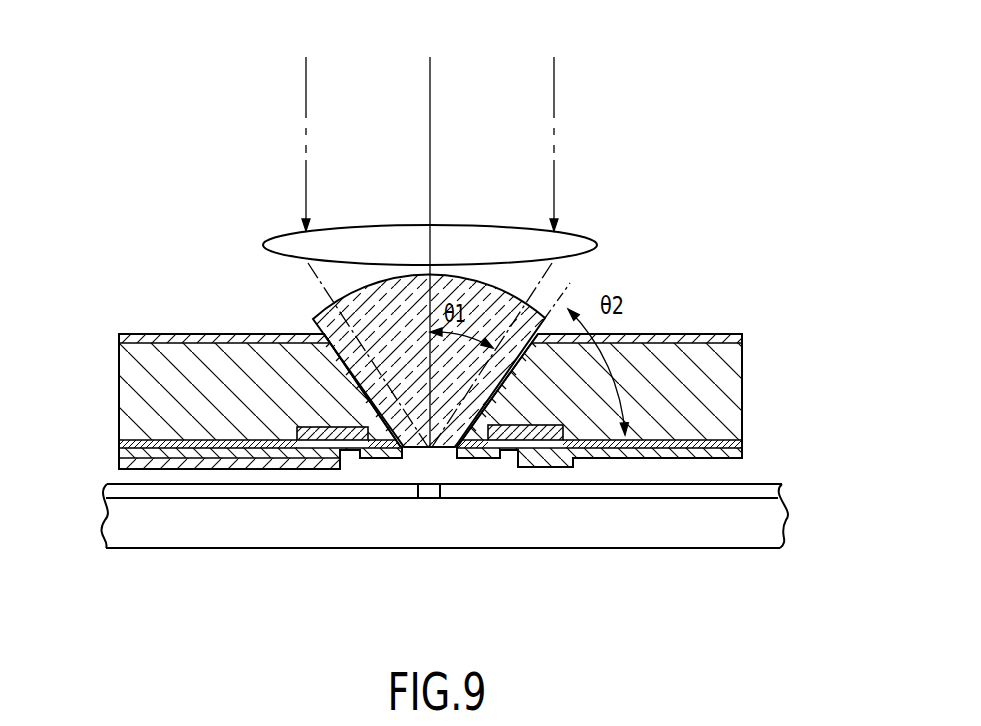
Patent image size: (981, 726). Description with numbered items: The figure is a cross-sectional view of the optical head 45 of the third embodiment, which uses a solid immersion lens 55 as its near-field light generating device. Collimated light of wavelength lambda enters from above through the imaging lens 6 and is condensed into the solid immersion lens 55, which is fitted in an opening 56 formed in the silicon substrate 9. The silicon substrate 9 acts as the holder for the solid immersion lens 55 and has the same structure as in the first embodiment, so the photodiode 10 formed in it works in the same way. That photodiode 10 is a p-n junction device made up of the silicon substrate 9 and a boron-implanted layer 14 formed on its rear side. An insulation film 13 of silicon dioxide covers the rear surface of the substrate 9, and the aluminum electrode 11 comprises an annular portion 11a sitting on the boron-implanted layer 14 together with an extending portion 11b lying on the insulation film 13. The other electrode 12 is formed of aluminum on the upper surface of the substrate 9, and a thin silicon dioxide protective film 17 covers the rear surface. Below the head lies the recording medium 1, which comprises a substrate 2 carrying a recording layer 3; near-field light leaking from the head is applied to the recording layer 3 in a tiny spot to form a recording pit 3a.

The recording medium 1 is at (601, 568).
The substrate 2 is at (787, 527).
The recording layer 3 is at (778, 491).
The recording pit 3a is at (431, 500).
The imaging lens 6 is at (588, 231).
The silicon substrate 9 is at (127, 365).
The photodiode 10 is at (328, 404).
The electrode 11 is at (118, 452).
The annular portion 11a is at (547, 455).
The extending portion 11b is at (202, 455).
The electrode 12 is at (155, 333).
The insulation film 13 is at (118, 444).
The boron-implanted layer 14 is at (322, 428).
The protective film 17 is at (118, 462).
The optical head 45 is at (680, 280).
The solid immersion lens 55 is at (392, 300).
The opening 56 is at (427, 460).